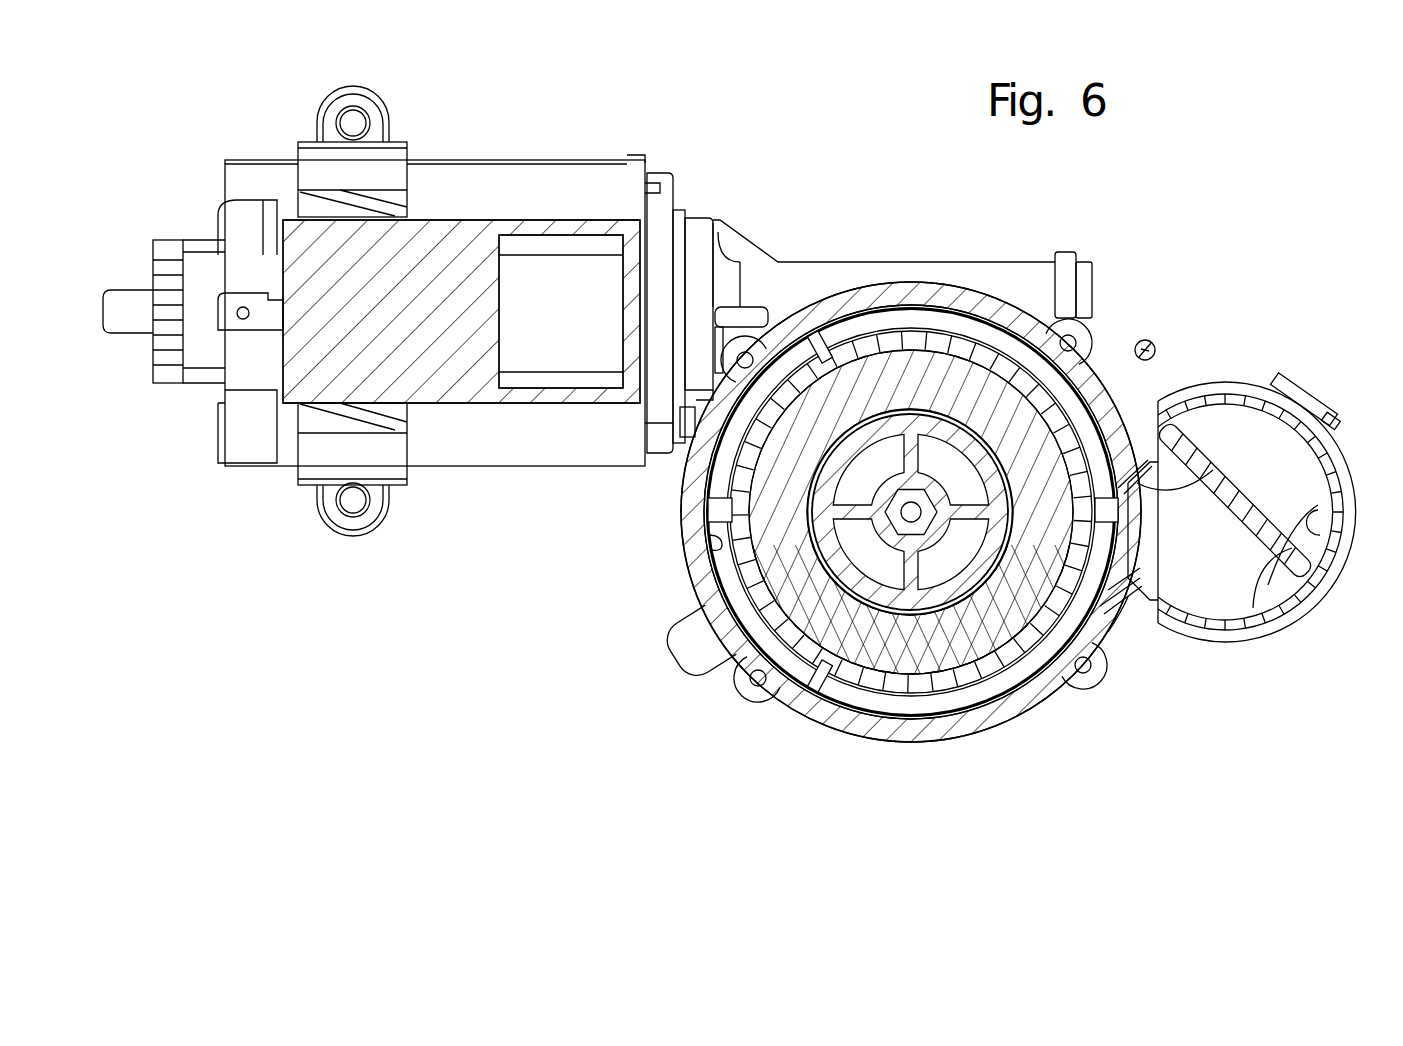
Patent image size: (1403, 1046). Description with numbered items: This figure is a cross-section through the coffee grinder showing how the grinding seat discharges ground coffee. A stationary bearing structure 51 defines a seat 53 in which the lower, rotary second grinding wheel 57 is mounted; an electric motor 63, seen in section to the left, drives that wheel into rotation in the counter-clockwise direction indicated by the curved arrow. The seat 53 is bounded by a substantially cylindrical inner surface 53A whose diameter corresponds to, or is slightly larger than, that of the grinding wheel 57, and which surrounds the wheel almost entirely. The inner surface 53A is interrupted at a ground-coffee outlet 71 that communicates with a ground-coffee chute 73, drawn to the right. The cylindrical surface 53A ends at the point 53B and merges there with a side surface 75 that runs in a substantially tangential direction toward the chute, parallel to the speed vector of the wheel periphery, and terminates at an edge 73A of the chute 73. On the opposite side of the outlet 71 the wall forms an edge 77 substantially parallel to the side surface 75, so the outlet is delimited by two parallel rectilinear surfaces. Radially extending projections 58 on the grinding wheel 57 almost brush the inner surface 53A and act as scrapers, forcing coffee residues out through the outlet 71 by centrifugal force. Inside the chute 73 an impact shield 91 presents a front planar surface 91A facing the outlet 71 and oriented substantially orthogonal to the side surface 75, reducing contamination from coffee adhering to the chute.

The stationary bearing structure 51 is at (1106, 334).
The seat 53 is at (920, 322).
The inner surface 53A is at (722, 548).
The end of the cylindrical surface 53B is at (1092, 630).
The second grinding wheel 57 is at (1028, 421).
The radially extending projections 58 is at (840, 310).
The electric motor 63 is at (457, 453).
The ground-coffee outlet 71 is at (1133, 571).
The ground-coffee chute 73 is at (1326, 528).
The edge of the ground-coffee chute 73A is at (1163, 520).
The side surface 75 is at (1122, 614).
The edge 77 is at (1200, 477).
The impact shield 91 is at (1232, 494).
The front planar surface 91A is at (1253, 628).